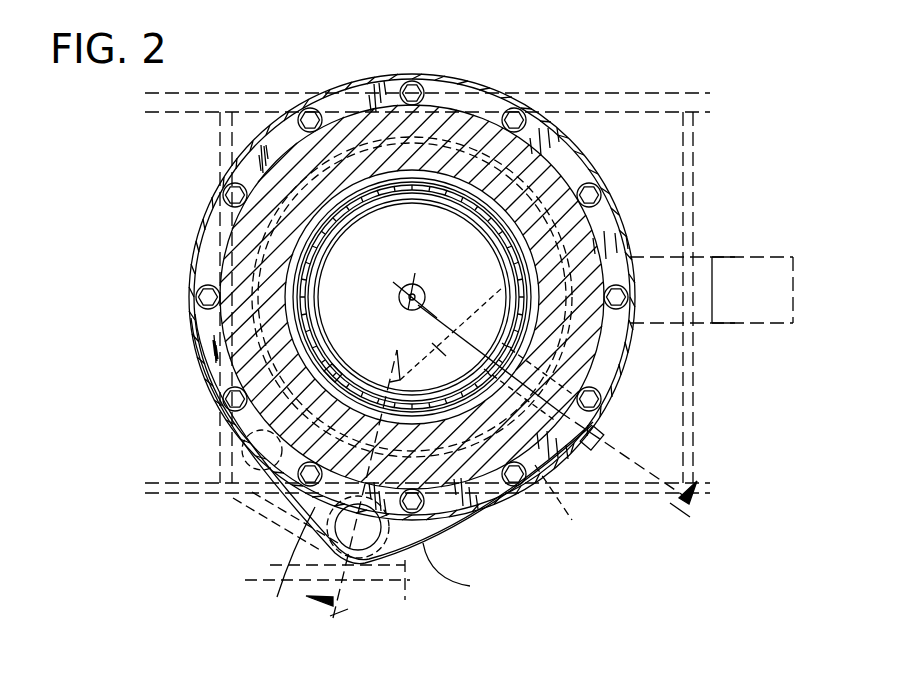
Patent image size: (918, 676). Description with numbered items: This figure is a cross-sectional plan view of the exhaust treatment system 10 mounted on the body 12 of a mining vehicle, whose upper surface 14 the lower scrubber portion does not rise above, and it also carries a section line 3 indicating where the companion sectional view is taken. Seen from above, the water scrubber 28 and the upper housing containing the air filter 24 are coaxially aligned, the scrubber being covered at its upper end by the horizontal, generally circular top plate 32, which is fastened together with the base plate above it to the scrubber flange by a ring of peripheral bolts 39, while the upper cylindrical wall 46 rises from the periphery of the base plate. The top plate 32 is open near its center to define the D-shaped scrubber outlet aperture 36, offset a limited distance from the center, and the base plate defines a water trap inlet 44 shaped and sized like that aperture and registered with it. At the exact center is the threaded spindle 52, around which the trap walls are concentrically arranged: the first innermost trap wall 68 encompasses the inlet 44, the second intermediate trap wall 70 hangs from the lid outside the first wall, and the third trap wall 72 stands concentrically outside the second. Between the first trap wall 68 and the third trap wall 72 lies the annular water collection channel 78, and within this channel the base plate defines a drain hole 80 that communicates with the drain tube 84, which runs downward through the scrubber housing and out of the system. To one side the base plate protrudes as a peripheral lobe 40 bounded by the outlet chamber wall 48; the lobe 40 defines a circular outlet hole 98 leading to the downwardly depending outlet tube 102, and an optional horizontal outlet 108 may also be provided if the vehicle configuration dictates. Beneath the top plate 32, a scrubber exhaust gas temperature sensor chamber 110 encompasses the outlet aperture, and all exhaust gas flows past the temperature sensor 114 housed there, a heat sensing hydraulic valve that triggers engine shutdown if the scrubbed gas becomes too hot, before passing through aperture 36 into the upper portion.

The exhaust treatment system 10 is at (512, 62).
The body 12 is at (676, 85).
The upper surface 14 is at (693, 219).
The horizontal outlet 108 is at (757, 255).
The water scrubber 28 is at (563, 242).
The air filter 24 is at (590, 360).
The bolts 39 is at (223, 397).
The upper cylindrical wall 46 is at (603, 410).
The top plate 32 is at (403, 244).
The third trap wall 72 is at (520, 350).
The second intermediate trap wall 70 is at (436, 197).
The threaded spindle 52 is at (400, 297).
The scrubber outlet aperture 36 is at (483, 312).
The first innermost trap wall 68 is at (478, 313).
The drain hole 80 is at (342, 368).
The water trap inlet 44 is at (445, 350).
The annular water collection channel 78 is at (446, 356).
The drain tube 84 is at (245, 434).
The peripheral lobe 40 is at (265, 553).
The outlet hole 98 is at (280, 596).
The outlet chamber wall 48 is at (470, 586).
The outlet tube 102 is at (338, 594).
The temperature sensor 114 is at (573, 480).
The scrubber exhaust gas temperature sensor chamber 110 is at (540, 473).
The section line 3- 3 is at (501, 496).